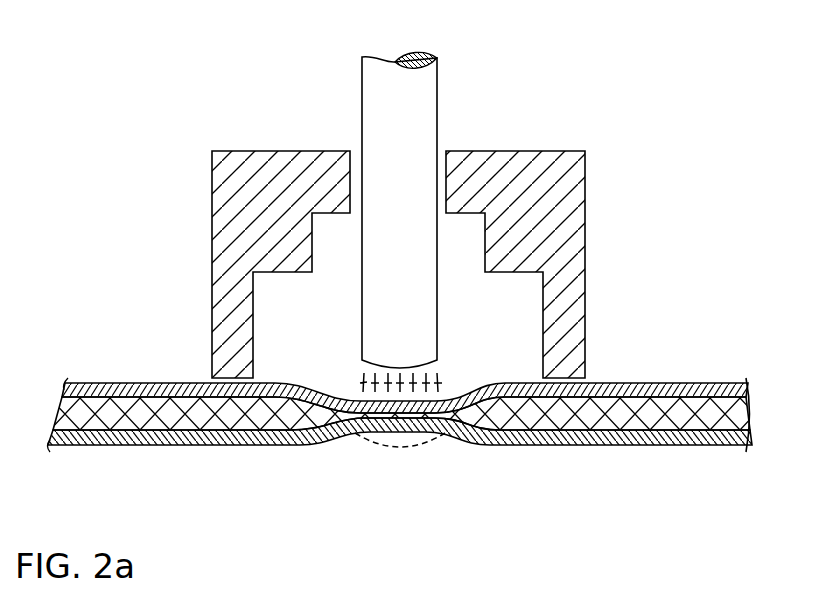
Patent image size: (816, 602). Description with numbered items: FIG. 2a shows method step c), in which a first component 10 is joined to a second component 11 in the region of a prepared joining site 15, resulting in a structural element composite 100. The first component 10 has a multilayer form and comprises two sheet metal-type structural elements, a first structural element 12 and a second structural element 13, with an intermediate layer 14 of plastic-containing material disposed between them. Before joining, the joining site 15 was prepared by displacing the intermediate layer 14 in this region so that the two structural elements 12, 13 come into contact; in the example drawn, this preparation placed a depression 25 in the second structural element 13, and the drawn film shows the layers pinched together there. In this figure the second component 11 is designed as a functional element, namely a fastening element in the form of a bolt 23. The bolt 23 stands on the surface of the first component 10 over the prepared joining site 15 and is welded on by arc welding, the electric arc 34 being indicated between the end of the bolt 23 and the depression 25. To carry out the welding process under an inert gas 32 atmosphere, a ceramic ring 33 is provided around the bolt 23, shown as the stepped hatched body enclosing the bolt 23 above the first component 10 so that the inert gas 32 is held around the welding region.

The first component 10 is at (400, 428).
The second component 11 is at (398, 192).
The first structural element of the first component 12 is at (188, 438).
The second structural element of the first component 13 is at (122, 392).
The intermediate layer 14 is at (130, 418).
The joining site 15 is at (378, 443).
The bolt 23 is at (417, 90).
The depression 25 is at (365, 399).
The inert gas 32 is at (300, 347).
The ceramic ring 33 is at (570, 222).
The electric arc 34 is at (442, 382).
The structural element composite 100 is at (400, 429).